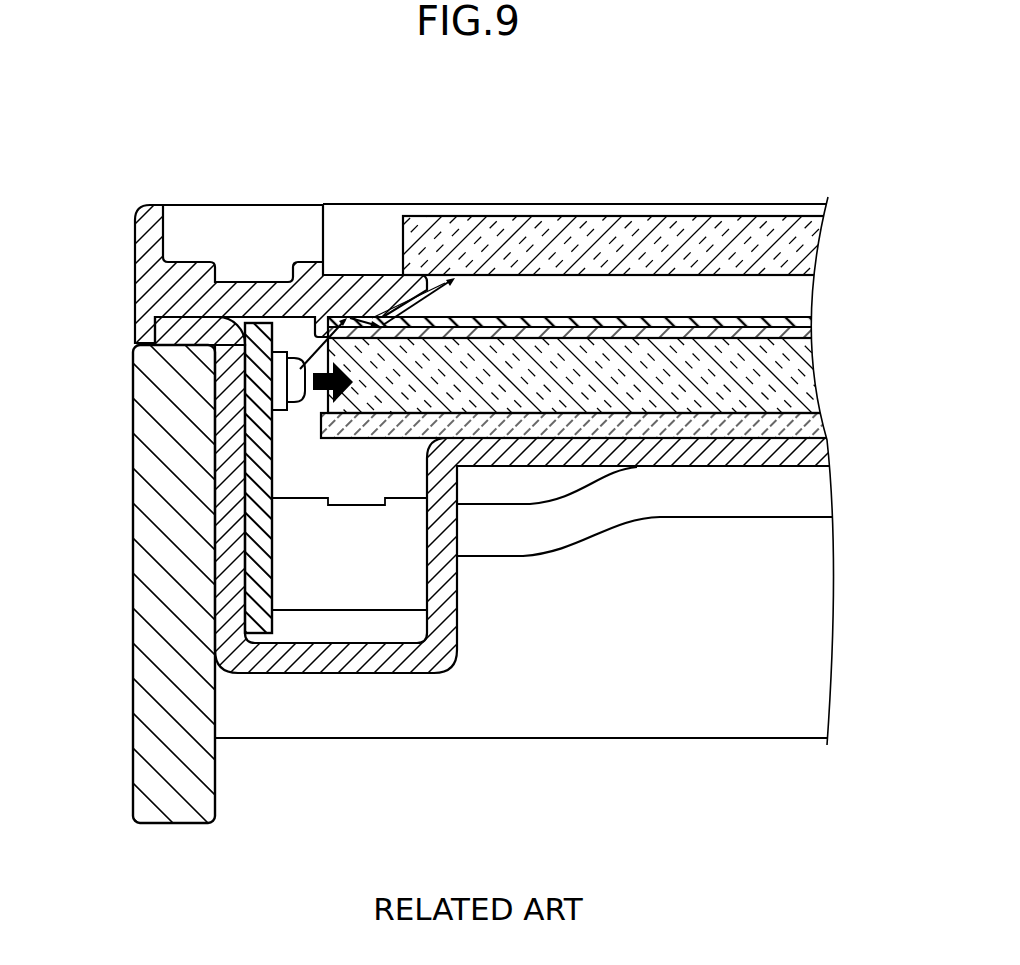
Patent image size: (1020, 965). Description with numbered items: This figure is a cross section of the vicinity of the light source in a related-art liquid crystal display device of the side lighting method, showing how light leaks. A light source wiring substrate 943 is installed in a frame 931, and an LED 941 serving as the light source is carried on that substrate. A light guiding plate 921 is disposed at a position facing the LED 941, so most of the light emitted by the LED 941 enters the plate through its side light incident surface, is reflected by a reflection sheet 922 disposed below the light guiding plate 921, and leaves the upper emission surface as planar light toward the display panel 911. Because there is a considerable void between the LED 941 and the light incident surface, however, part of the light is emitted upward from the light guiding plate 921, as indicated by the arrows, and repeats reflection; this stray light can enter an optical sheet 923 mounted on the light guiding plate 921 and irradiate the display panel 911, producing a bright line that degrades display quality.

The display panel 911 is at (805, 243).
The light guiding plate 921 is at (800, 382).
The reflection sheet 922 is at (810, 427).
The optical sheet 923 is at (823, 303).
The frame 931 is at (173, 332).
The LED 941 is at (295, 380).
The light source wiring substrate 943 is at (260, 437).